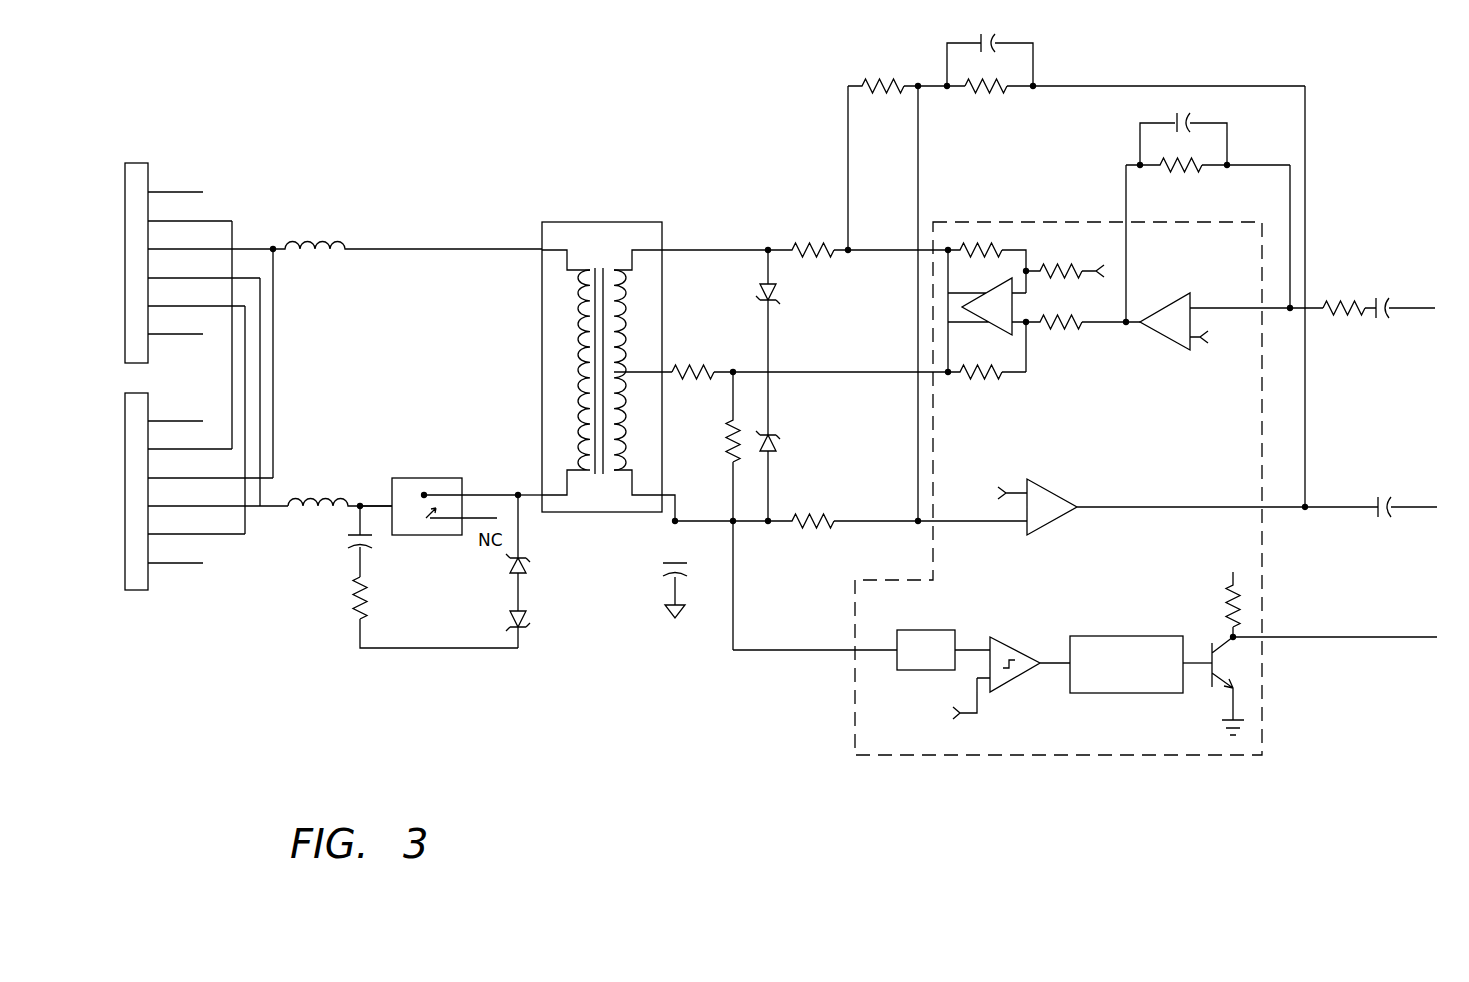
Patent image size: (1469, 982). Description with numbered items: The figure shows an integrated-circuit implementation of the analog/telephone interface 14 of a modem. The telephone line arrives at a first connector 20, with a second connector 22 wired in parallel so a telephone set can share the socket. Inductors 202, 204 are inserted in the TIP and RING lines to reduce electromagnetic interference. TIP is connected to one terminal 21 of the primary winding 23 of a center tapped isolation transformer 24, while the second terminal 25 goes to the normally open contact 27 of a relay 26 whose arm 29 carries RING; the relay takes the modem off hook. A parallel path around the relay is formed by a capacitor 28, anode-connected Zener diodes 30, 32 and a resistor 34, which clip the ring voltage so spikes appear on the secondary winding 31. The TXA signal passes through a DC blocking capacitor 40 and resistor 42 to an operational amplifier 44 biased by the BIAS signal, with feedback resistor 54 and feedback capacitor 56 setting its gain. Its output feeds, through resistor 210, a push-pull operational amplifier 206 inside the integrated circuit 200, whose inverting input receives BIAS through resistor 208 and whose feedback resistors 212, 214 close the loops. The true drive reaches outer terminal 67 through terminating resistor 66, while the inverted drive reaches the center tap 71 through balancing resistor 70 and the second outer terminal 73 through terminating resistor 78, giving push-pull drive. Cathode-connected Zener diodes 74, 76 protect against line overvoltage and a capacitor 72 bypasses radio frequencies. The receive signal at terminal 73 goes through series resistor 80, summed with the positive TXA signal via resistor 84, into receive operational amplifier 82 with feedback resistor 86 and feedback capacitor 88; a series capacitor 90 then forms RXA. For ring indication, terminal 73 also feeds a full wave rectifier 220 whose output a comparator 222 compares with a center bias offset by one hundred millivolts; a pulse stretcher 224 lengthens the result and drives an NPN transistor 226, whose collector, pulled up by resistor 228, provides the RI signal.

The analog/telephone interface 14 is at (247, 771).
The first connector 20 is at (136, 590).
The second connector 22 is at (138, 163).
The inductor 202 is at (335, 241).
The inductor 204 is at (340, 491).
The terminal of the primary winding 21 is at (540, 250).
The primary winding 23 is at (578, 350).
The transformer 24 is at (598, 222).
The second terminal of the primary winding 25 is at (538, 495).
The relay 26 is at (420, 478).
The normally open contact 27 is at (463, 492).
The capacitor 28 is at (356, 546).
The arm of the relay 29 is at (392, 506).
The Zener diode 30 is at (532, 617).
The secondary winding 31 is at (626, 312).
The Zener diode 32 is at (532, 566).
The resistor 34 is at (368, 603).
The DC blocking capacitor 40 is at (1386, 320).
The resistor 42 is at (1330, 316).
The operational amplifier 44 is at (1166, 307).
The feedback resistor 54 is at (1190, 168).
The feedback capacitor 56 is at (1180, 118).
The terminating resistor 66 is at (798, 248).
The outer terminal 67 is at (664, 249).
The balancing resistor 70 is at (700, 366).
The center tap 71 is at (664, 374).
The capacitor 72 is at (667, 571).
The second outer terminal 73 is at (664, 495).
The Zener diode 74 is at (779, 443).
The Zener diode 76 is at (758, 291).
The terminating resistor 78 is at (728, 440).
The series resistor 80 is at (885, 82).
The receive operational amplifier 82 is at (1045, 490).
The resistor 84 is at (812, 516).
The feedback resistor 86 is at (993, 90).
The feedback capacitor 88 is at (997, 41).
The series capacitor 90 is at (1374, 499).
The integrated circuit 200 is at (1172, 760).
The push-pull operational amplifier 206 is at (1000, 326).
The resistor 208 is at (1058, 269).
The resistor 210 is at (1068, 325).
The feedback resistor 212 is at (990, 376).
The feedback resistor 214 is at (978, 244).
The full wave rectifier 220 is at (930, 631).
The comparator 222 is at (1015, 684).
The pulse stretcher 224 is at (1138, 635).
The NPN transistor 226 is at (1228, 676).
The resistor 228 is at (1237, 605).